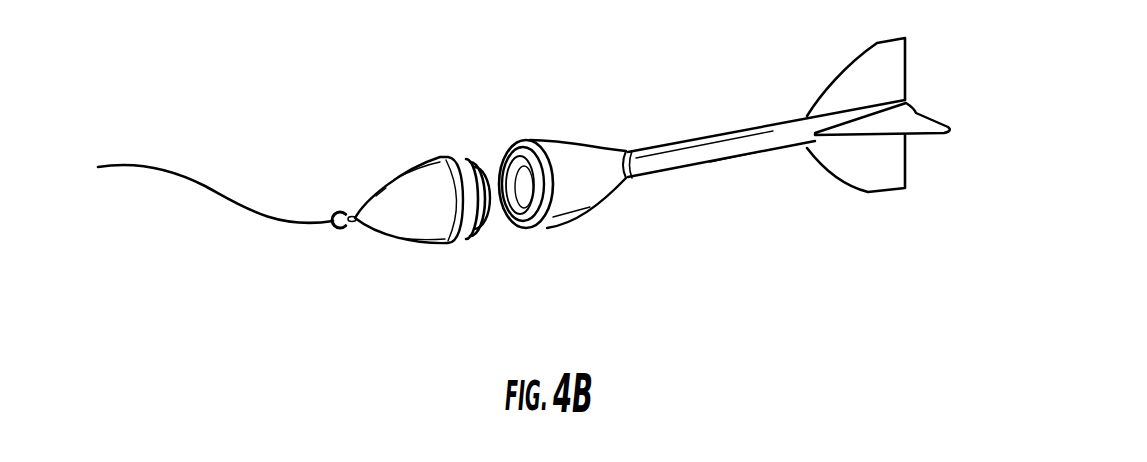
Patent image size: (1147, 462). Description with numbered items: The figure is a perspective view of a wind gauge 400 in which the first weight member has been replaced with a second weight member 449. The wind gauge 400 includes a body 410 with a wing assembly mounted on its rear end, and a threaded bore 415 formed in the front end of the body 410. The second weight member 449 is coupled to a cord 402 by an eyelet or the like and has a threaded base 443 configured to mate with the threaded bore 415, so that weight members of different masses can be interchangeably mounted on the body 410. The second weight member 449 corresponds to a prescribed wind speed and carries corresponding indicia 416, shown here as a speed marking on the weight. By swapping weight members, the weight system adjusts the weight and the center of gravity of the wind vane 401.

The wind gauge 400 is at (632, 205).
The wind vane 401 is at (724, 158).
The cord 402 is at (190, 176).
The body 410 is at (668, 147).
The threaded bore 415 is at (530, 168).
The indicia 416 is at (409, 265).
The threaded base 443 is at (492, 215).
The second weight member 449 is at (387, 248).